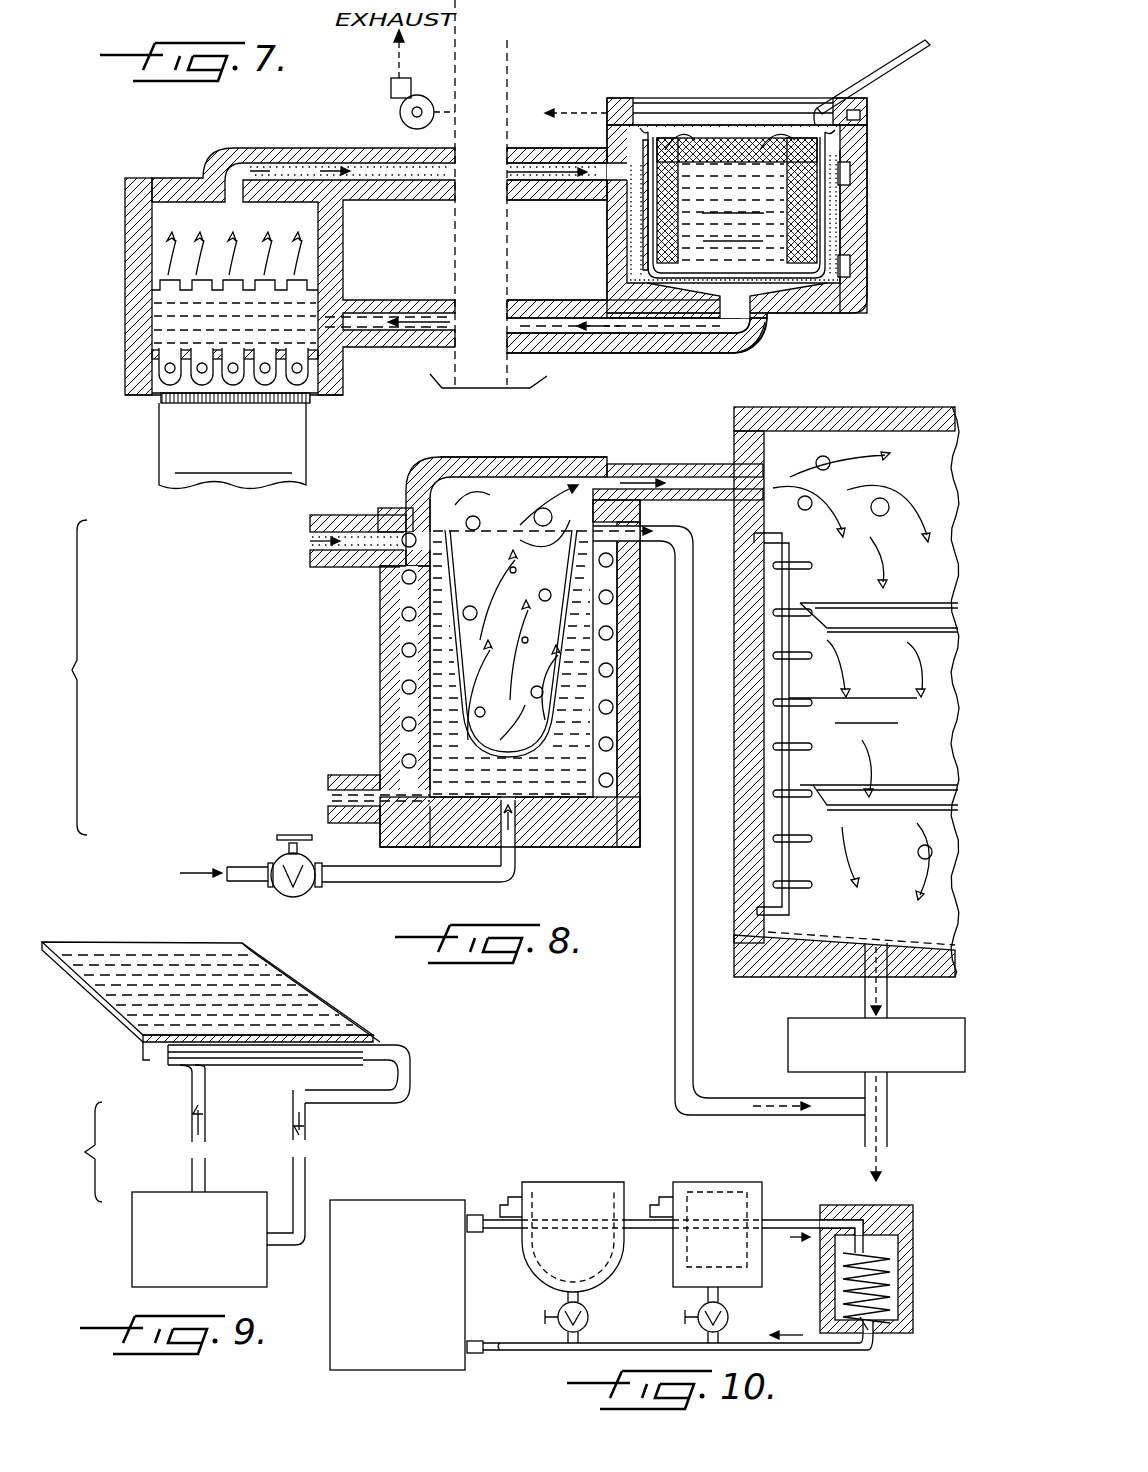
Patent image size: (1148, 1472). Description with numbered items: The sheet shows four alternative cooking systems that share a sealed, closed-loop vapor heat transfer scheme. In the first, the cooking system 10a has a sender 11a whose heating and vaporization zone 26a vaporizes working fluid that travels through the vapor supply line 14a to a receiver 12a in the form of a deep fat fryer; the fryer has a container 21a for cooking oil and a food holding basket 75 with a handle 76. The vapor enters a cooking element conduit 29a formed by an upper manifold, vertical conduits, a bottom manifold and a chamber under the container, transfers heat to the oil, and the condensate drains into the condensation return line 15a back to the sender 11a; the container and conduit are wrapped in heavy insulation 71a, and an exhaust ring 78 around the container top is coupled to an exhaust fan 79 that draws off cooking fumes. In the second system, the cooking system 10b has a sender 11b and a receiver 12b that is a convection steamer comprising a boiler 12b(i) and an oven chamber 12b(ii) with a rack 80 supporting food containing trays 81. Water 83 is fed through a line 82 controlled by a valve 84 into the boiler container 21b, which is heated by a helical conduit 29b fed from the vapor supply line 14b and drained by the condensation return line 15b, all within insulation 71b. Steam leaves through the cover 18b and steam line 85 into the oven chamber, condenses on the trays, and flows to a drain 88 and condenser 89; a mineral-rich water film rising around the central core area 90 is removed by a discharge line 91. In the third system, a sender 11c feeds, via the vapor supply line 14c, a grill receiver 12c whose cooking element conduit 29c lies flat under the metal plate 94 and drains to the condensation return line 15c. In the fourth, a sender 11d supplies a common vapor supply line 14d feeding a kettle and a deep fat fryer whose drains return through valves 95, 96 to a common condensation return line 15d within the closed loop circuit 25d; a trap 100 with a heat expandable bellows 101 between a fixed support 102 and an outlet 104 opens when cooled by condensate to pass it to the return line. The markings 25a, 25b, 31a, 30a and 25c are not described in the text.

In FIG. 7, the cooking system 10a is at (182, 116).
In FIG. 7, the sender 11a is at (190, 178).
In FIG. 7, the vapor supply connection 25a is at (282, 108).
In FIG. 7, the vapor supply line 14a is at (368, 116).
In FIG. 7, the exhaust fan 79 is at (424, 96).
In FIG. 7, the heating and vaporization zone 26a is at (160, 232).
In FIG. 7, the heat exchange tubes 31a is at (160, 378).
In FIG. 7, the burner plate 30a is at (163, 399).
In FIG. 7, the condensation return line 15a is at (363, 330).
In FIG. 7, the receiver 12a is at (770, 103).
In FIG. 7, the container 21a is at (682, 82).
In FIG. 7, the food holding basket 75 is at (755, 132).
In FIG. 7, the handle 76 is at (872, 78).
In FIG. 7, the exhaust ring 78 is at (867, 108).
In FIG. 7, the heavy insulation 71a is at (852, 222).
In FIG. 7, the cooking element conduit 29a is at (640, 215).
In FIG. 8, the cooking system 10b is at (137, 523).
In FIG. 8, the sender 11b is at (64, 677).
In FIG. 8, the vapor supply line 14b is at (340, 538).
In FIG. 8, the vapor supply connection 25b is at (347, 503).
In FIG. 8, the receiver 12b is at (426, 454).
In FIG. 8, the cover 18b is at (446, 458).
In FIG. 8, the steam line 85 is at (654, 476).
In FIG. 8, the helical conduit 29b is at (398, 592).
In FIG. 8, the container 21b is at (439, 707).
In FIG. 8, the insulation 71b is at (392, 728).
In FIG. 8, the condensation return line 15b is at (333, 800).
In FIG. 8, the central core area 90 is at (542, 672).
In FIG. 8, the discharge line 91 is at (681, 726).
In FIG. 8, the rack 80 is at (791, 588).
In FIG. 8, the food containing trays 81 is at (887, 602).
In FIG. 8, the water 83 is at (512, 845).
In FIG. 8, the line 82 is at (387, 880).
In FIG. 8, the valve 84 is at (290, 897).
In FIG. 8, the drain 88 is at (867, 992).
In FIG. 8, the condenser 89 is at (787, 1033).
In FIG. 9, the metal plate 94 is at (293, 981).
In FIG. 9, the receiver 12c is at (345, 1002).
In FIG. 9, the cooking element conduit 29c is at (233, 1070).
In FIG. 9, the vapor supply line 14c is at (190, 1120).
In FIG. 9, the condensation return line 15c is at (307, 1125).
In FIG. 9, the line connections 25c is at (190, 1171).
In FIG. 9, the sender 11c is at (212, 1265).
In FIG. 10, the sender 11d is at (420, 1325).
In FIG. 10, the closed loop circuit 25d is at (473, 1217).
In FIG. 10, the common vapor supply line 14d is at (503, 1232).
In FIG. 10, the valve 95 is at (557, 1312).
In FIG. 10, the valve 96 is at (698, 1310).
In FIG. 10, the trap 100 is at (903, 1205).
In FIG. 10, the fixed support 102 is at (883, 1240).
In FIG. 10, the heat expandable bellows 101 is at (890, 1277).
In FIG. 10, the outlet 104 is at (870, 1325).
In FIG. 10, the common condensation return line 15d is at (807, 1350).